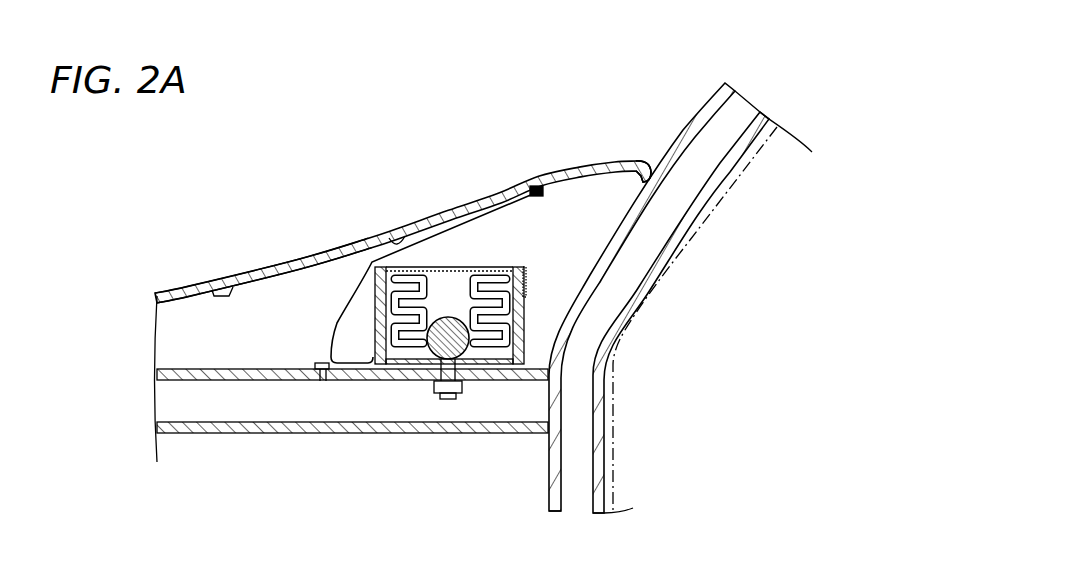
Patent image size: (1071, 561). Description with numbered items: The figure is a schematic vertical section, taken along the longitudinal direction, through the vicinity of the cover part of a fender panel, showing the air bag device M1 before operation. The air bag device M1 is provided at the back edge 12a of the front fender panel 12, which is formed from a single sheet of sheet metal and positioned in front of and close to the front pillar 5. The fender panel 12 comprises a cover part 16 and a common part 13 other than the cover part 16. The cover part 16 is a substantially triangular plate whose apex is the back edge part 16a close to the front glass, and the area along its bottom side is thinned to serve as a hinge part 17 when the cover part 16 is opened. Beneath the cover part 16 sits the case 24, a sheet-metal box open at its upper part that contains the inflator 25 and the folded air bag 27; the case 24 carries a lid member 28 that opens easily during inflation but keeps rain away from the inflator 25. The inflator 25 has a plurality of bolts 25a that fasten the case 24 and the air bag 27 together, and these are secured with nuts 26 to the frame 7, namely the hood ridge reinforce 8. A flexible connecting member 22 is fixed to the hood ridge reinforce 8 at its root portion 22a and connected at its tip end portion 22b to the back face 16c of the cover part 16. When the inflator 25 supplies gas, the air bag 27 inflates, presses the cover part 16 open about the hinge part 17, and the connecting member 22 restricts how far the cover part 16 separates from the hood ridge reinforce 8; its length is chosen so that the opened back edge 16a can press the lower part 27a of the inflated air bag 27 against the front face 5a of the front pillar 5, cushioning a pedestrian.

The front pillar 5 is at (706, 90).
The front face of the front pillar 5a is at (682, 133).
The frame 7 is at (226, 442).
The hood ridge reinforce 8 is at (200, 380).
The front fender panel 12 is at (186, 147).
The back edge of the fender panel 12a is at (640, 145).
The common part 13 is at (188, 284).
The cover part 16 is at (330, 248).
The back edge part of the cover part 16a is at (593, 124).
The back face of the cover part 16c is at (385, 238).
The hinge part 17 is at (222, 299).
The connecting member 22 is at (478, 218).
The root portion of the connecting member 22a is at (302, 358).
The tip end portion of the connecting member 22b is at (552, 208).
The case 24 is at (518, 336).
The inflator 25 is at (430, 358).
The bolts 25a is at (457, 366).
The nuts 26 is at (463, 388).
The air bag 27 is at (513, 307).
The lower part of the air bag 27a is at (578, 560).
The lid member 28 is at (500, 266).
The air bag device M1 is at (178, 200).